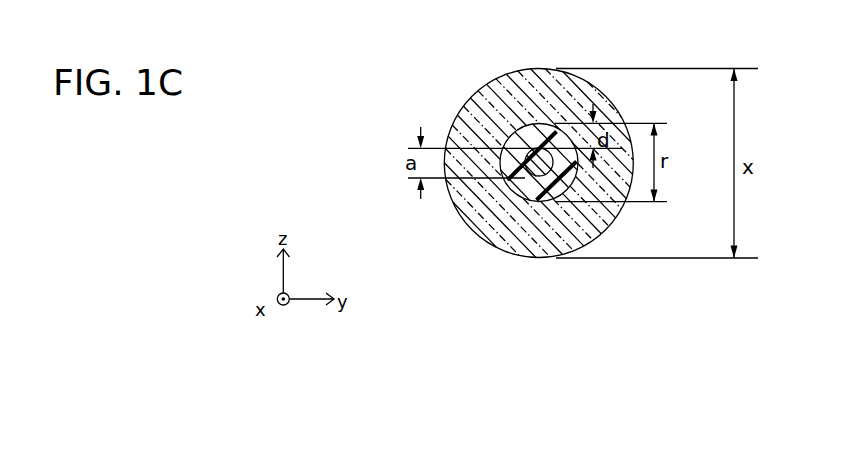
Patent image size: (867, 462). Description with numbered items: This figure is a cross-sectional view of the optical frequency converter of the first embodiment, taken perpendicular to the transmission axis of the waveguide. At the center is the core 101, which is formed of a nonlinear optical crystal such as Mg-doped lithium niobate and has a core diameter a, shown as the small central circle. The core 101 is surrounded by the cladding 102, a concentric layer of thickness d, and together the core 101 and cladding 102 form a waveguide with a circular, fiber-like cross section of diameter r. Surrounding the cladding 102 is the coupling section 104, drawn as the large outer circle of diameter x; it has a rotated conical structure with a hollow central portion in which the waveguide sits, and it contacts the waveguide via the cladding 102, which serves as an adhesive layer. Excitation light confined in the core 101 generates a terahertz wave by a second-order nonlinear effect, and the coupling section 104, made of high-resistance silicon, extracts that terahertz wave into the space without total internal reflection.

The core 101 is at (540, 200).
The cladding 102 is at (540, 124).
The coupling section 104 is at (490, 237).